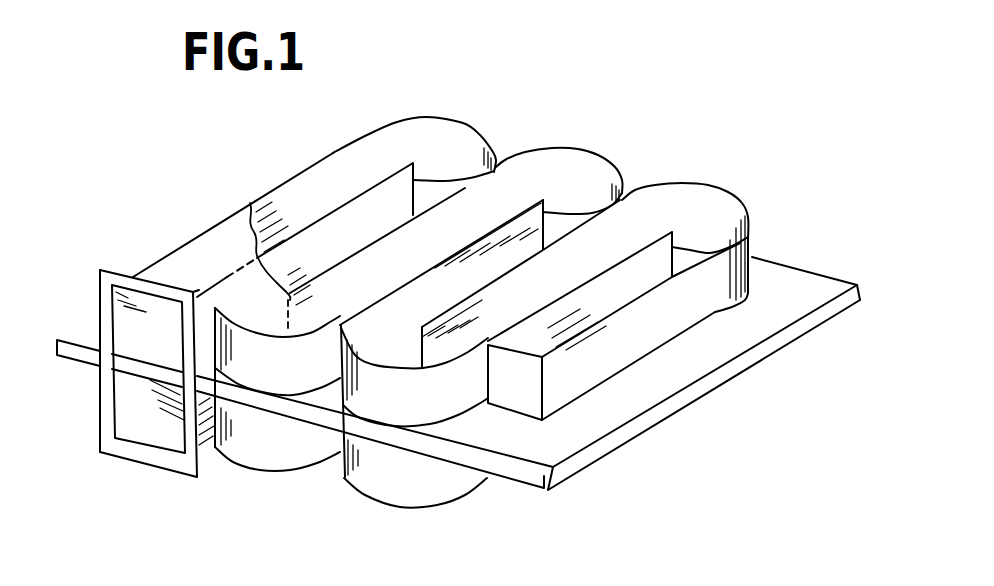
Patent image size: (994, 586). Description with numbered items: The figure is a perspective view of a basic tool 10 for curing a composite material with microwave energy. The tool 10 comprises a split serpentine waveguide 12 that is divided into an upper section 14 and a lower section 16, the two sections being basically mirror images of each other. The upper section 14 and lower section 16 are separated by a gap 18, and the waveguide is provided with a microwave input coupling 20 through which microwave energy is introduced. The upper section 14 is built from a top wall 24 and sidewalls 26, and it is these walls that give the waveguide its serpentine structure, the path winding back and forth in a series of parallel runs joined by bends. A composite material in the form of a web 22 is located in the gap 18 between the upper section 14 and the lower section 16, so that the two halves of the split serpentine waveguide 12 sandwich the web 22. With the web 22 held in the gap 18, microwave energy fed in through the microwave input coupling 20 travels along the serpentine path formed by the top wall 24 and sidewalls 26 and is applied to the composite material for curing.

The tool 10 is at (775, 207).
The split serpentine waveguide 12 is at (95, 259).
The upper section 14 is at (153, 263).
The lower section 16 is at (437, 503).
The gap 18 is at (100, 372).
The microwave input coupling 20 is at (197, 478).
The web 22 is at (862, 292).
The top wall 24 is at (220, 240).
The sidewalls 26 is at (348, 203).